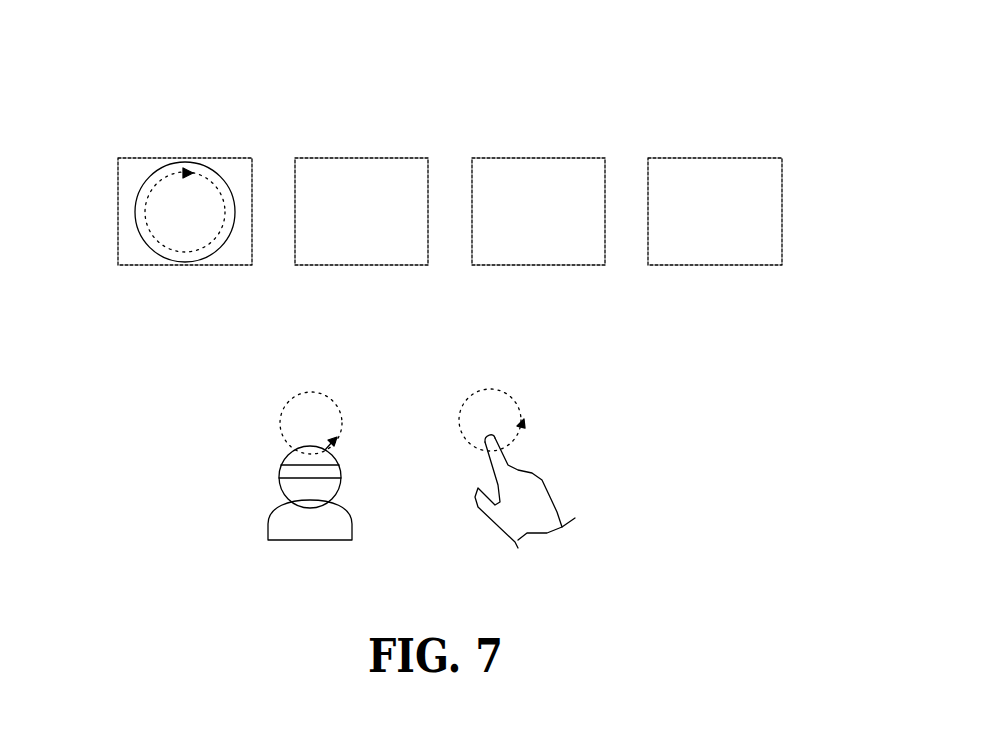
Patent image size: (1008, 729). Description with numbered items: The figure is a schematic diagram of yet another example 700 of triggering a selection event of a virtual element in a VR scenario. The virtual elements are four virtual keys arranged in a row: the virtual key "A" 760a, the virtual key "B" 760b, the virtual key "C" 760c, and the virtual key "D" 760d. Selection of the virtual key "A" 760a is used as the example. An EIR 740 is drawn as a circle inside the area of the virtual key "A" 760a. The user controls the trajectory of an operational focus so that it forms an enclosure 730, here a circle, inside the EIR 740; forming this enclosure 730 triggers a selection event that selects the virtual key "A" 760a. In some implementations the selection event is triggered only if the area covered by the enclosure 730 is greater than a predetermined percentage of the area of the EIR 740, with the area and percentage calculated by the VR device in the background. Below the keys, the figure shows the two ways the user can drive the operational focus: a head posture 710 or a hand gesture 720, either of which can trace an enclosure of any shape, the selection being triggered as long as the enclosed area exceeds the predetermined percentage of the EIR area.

The example of triggering a selection event 700 is at (847, 82).
The head posture 710 is at (251, 508).
The hand gesture 720 is at (587, 507).
The enclosure 730 is at (172, 245).
The EIR 740 is at (162, 165).
The virtual key "A" 760a is at (118, 247).
The virtual key "B" 760b is at (405, 262).
The virtual key "C" 760c is at (580, 257).
The virtual key "D" 760d is at (757, 257).